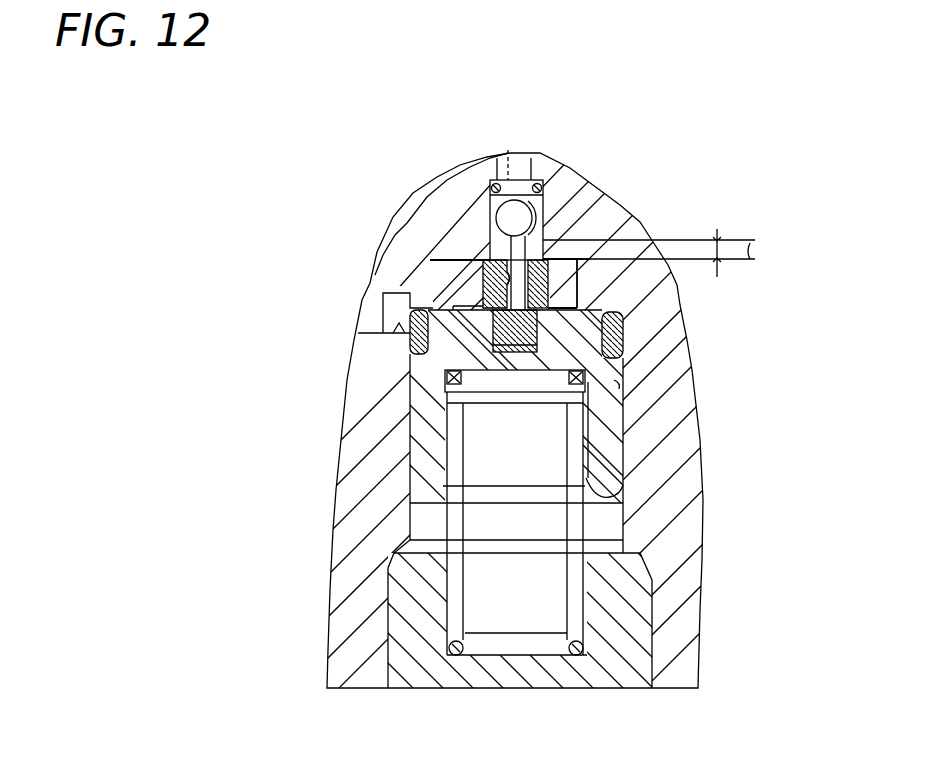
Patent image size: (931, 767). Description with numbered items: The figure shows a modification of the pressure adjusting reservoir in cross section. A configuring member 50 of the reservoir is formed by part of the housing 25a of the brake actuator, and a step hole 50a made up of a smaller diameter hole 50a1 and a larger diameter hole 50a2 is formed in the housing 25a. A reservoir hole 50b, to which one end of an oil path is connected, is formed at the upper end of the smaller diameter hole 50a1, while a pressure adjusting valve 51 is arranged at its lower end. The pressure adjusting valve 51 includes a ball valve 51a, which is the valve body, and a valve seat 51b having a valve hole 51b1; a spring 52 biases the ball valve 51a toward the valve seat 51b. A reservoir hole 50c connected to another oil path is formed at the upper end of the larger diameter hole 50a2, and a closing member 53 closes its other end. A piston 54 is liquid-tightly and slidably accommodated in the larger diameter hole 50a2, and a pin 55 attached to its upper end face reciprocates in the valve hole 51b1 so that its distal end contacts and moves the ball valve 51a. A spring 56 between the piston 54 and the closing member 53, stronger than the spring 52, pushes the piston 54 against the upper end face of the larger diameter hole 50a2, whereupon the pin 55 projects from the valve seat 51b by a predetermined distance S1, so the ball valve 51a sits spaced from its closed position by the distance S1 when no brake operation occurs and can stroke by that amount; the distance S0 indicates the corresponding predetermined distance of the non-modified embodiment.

The configuring member 50 is at (648, 207).
The housing 25a is at (433, 197).
The reservoir hole 50b is at (526, 166).
The spring 52 is at (508, 151).
The ball valve 51a is at (495, 219).
The pressure adjusting valve 51 is at (258, 205).
The valve seat 51b is at (485, 270).
The valve hole 51b1 is at (500, 283).
The pin 55 is at (453, 308).
The smaller diameter hole 50a1 is at (543, 190).
The predetermined distance S1 is at (665, 252).
The distance S0 is at (713, 272).
The reservoir hole 50c is at (383, 333).
The piston 54 is at (620, 430).
The larger diameter hole 50a2 is at (624, 382).
The step hole 50a is at (625, 478).
The spring 56 is at (583, 527).
The closing member 53 is at (640, 613).